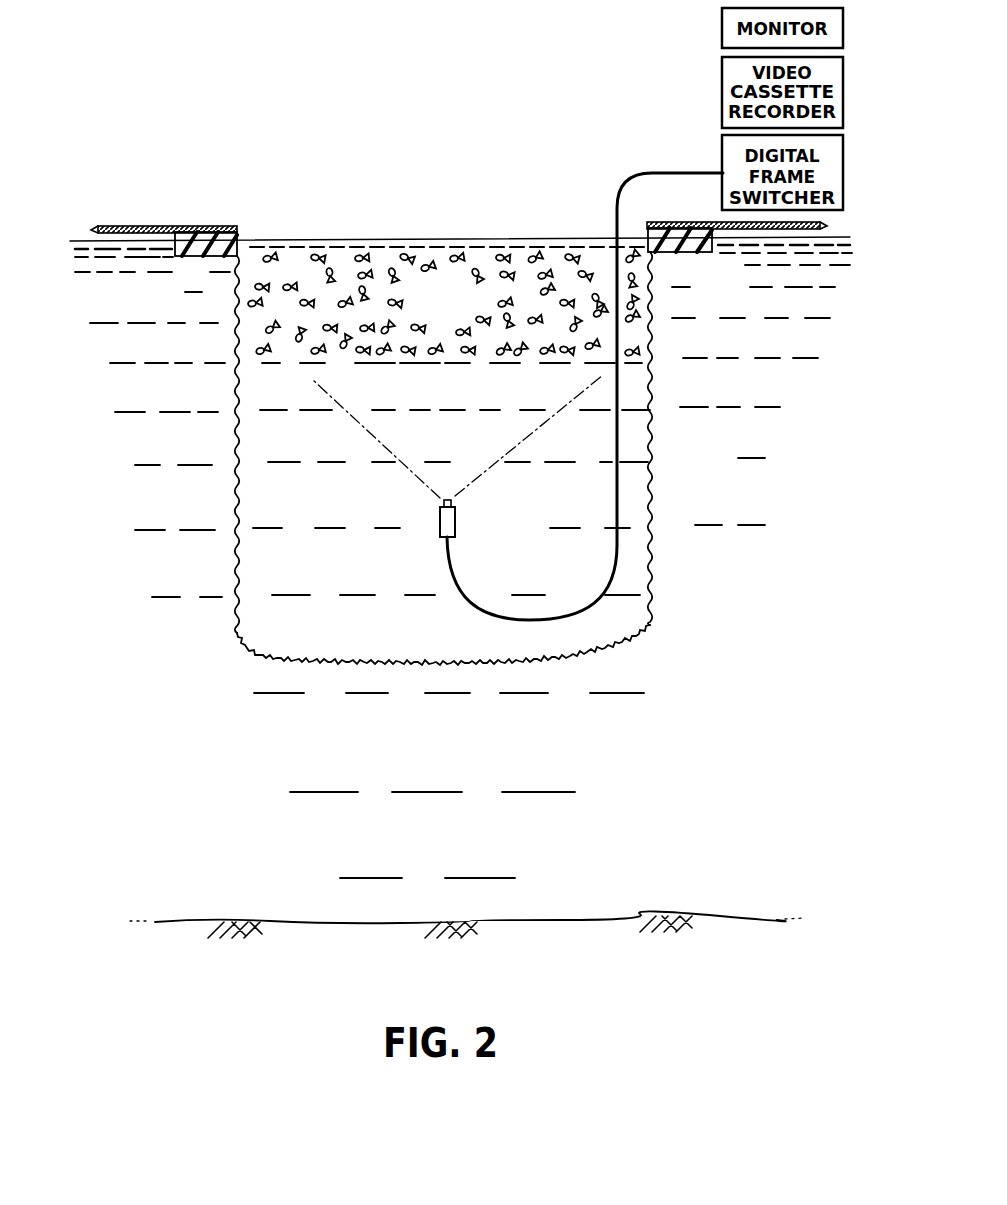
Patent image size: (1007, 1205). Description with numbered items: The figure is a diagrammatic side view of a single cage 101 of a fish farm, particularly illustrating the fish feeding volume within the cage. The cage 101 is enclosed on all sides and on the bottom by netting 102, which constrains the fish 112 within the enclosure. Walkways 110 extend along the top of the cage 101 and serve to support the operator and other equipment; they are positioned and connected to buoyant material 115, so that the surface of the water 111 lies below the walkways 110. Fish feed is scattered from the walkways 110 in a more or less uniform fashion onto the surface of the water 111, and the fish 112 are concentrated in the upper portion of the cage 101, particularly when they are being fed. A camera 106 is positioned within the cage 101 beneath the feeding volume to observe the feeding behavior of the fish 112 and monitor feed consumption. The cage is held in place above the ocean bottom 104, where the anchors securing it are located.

The cage 101 is at (258, 651).
The netting 102 is at (652, 484).
The ocean bottom 104 is at (552, 920).
The camera 106 is at (456, 522).
The walkway 110 is at (142, 225).
The surface of the water 111 is at (485, 238).
The fish 112 is at (455, 312).
The buoyant material 115 is at (190, 258).